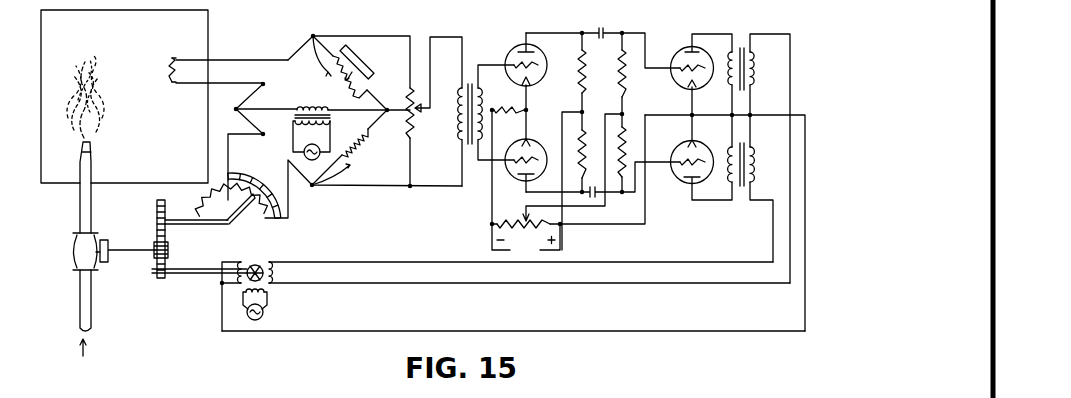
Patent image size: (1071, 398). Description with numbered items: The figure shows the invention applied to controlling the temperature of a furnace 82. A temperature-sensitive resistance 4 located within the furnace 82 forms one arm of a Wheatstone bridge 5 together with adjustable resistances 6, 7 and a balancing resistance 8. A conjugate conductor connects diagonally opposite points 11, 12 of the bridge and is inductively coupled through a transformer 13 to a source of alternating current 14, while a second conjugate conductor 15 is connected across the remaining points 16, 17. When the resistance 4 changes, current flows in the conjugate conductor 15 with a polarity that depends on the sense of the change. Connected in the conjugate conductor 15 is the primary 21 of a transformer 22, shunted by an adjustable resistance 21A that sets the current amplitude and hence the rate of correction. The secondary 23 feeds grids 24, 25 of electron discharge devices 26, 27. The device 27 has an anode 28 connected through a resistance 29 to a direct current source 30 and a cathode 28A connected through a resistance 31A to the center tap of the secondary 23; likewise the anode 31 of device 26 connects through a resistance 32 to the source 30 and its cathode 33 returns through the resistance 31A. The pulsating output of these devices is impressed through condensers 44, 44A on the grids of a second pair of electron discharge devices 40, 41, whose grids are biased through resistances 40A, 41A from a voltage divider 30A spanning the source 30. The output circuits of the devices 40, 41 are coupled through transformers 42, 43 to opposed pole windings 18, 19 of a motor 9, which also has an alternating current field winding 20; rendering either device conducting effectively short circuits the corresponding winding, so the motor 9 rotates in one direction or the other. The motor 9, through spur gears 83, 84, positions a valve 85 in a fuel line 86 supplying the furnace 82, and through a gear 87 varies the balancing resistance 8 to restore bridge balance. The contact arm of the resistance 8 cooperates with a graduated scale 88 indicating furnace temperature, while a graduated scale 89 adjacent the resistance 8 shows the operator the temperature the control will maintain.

The resistance 4 is at (168, 66).
The Wheatstone bridge 5 is at (296, 116).
The adjustable resistance 6 is at (350, 84).
The adjustable resistance 7 is at (364, 140).
The balancing resistance 8 is at (250, 208).
The motor 9 is at (258, 263).
The bridge point 11 is at (236, 109).
The bridge point 12 is at (389, 112).
The transformer 13 is at (292, 118).
The source of alternating current 14 is at (303, 152).
The conjugate conductor 15 is at (366, 36).
The bridge point 16 is at (312, 36).
The bridge point 17 is at (315, 188).
The pole winding 18 is at (238, 260).
The pole winding 19 is at (273, 268).
The alternating current field winding 20 is at (270, 305).
The primary 21 is at (460, 106).
The adjustable resistance 21A is at (418, 128).
The transformer 22 is at (470, 146).
The secondary 23 is at (483, 96).
The grid 24 is at (542, 150).
The grid 25 is at (535, 58).
The electron discharge device 26 is at (535, 176).
The electron discharge device 27 is at (506, 57).
The anode 28 is at (521, 49).
The cathode 28A is at (533, 79).
The resistance 29 is at (592, 48).
The direct current source 30 is at (568, 187).
The voltage divider 30A is at (496, 233).
The anode 31 is at (520, 178).
The resistance 31A is at (516, 109).
The resistance 32 is at (587, 130).
The cathode 33 is at (512, 157).
The electron discharge device 40 is at (706, 151).
The resistance 40A is at (627, 180).
The electron discharge device 41 is at (688, 50).
The resistance 41A is at (625, 80).
The transformer 42 is at (740, 188).
The transformer 43 is at (742, 46).
The condenser 44 is at (598, 30).
The condenser 44A is at (596, 198).
The furnace 82 is at (211, 15).
The spur gear 83 is at (164, 279).
The spur gear 84 is at (168, 254).
The valve 85 is at (108, 263).
The fuel line 86 is at (92, 300).
The gear 87 is at (156, 205).
The graduated scale 88 is at (282, 200).
The graduated scale 89 is at (369, 64).